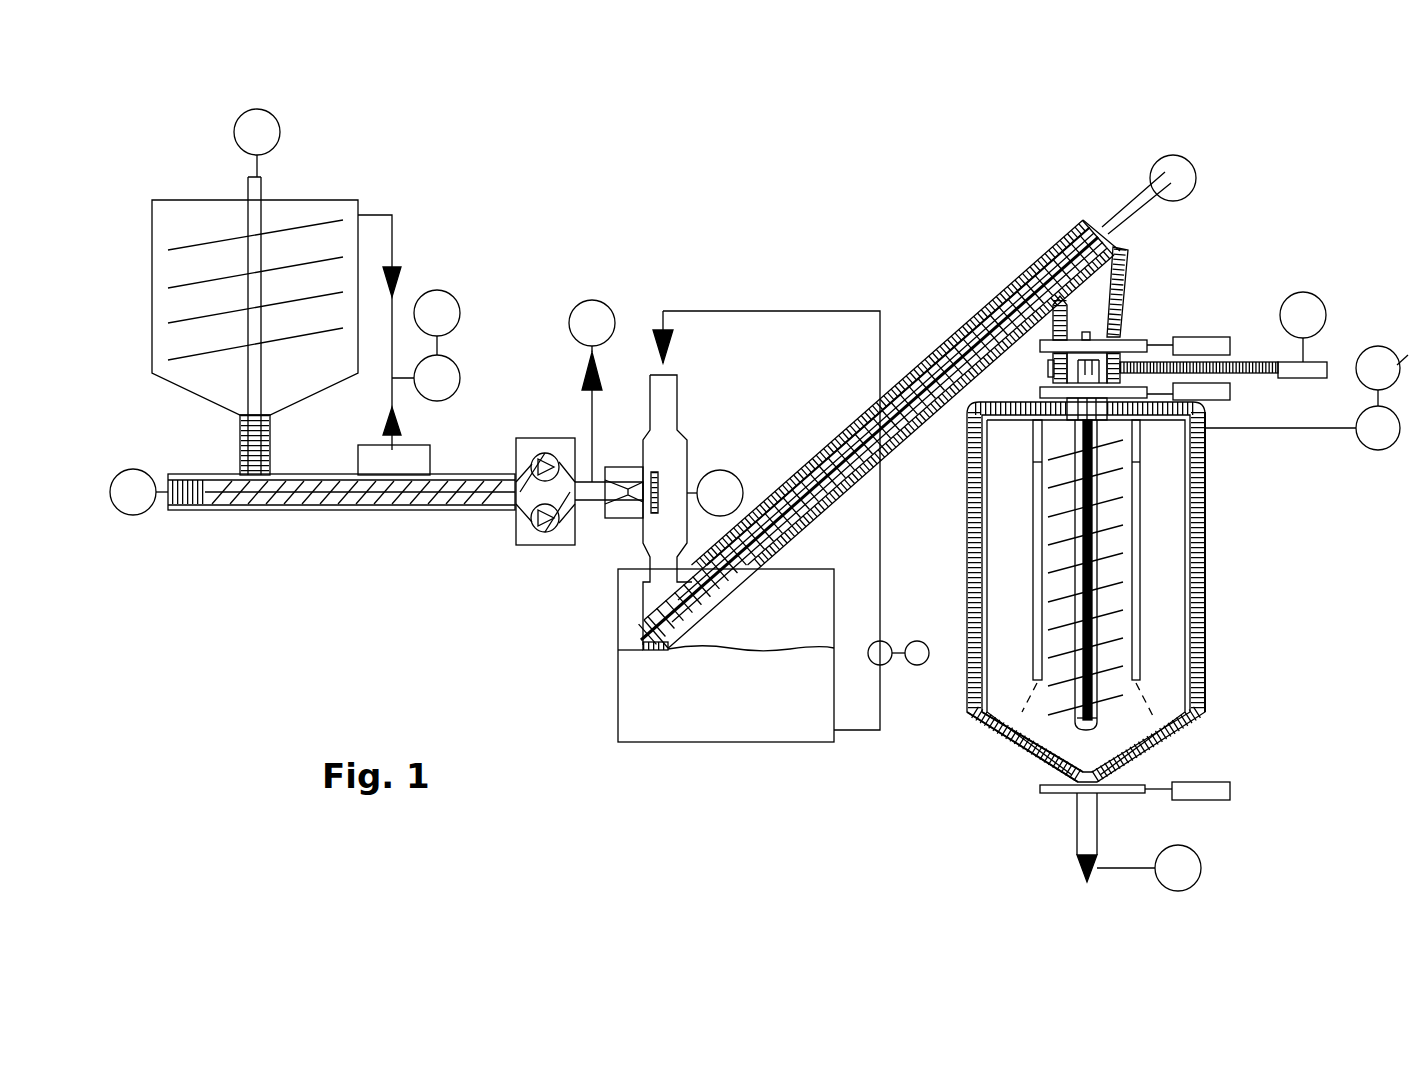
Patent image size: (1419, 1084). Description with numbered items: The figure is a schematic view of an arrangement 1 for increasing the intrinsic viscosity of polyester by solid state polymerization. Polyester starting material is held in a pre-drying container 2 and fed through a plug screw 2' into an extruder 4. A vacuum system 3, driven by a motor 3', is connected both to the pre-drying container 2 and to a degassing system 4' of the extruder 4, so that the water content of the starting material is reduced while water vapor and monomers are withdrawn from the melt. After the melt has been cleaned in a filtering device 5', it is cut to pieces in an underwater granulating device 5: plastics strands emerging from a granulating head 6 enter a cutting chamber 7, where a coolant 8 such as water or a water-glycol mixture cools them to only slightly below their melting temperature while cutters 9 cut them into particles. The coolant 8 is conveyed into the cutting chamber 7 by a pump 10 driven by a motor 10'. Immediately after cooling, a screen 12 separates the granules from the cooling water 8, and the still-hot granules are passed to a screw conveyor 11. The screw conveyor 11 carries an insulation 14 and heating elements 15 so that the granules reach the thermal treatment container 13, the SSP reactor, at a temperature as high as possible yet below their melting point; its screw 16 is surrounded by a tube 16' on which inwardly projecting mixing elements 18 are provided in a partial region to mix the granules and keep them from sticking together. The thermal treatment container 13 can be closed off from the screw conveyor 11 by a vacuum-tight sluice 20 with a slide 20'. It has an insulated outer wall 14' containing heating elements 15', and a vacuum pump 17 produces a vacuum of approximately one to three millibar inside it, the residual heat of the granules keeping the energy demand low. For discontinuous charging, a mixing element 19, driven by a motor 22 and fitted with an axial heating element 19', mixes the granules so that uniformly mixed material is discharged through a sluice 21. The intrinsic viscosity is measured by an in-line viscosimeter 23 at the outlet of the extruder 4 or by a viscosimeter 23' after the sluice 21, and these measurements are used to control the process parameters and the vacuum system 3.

The extruder enclosure 1 is at (748, 285).
The pre-drying container 2 is at (268, 262).
The plug screw 2' is at (274, 445).
The vacuum system 3 is at (433, 332).
The motor 3' is at (461, 306).
The extruder 4 is at (312, 535).
The degassing system 4' is at (415, 454).
The underwater granulating device 5 is at (615, 534).
The filtering device 5' is at (543, 524).
The granulating head 6 is at (615, 475).
The cutting chamber 7 is at (673, 477).
The coolant 8 is at (713, 717).
The cutters 9 is at (655, 480).
The pump 10 is at (891, 633).
The motor 10' is at (931, 691).
The screw conveyor 11 is at (922, 341).
The screen 12 is at (640, 650).
The thermal treatment container 13 is at (1231, 557).
The insulation 14 is at (892, 389).
The insulated outer wall 14' is at (1127, 705).
The heating elements 15 is at (933, 409).
The heating elements 15' is at (1247, 562).
The screw 16 is at (918, 397).
The tube 16' is at (723, 613).
The vacuum pump 17 is at (1385, 450).
The mixing elements 18 is at (823, 445).
The mixing element 19 is at (1161, 575).
The heating element 19' is at (1023, 758).
The vacuum-tight sluice 20 is at (1183, 325).
The slide 20' is at (1118, 296).
The sluice 21 is at (1056, 827).
The motor 22 is at (1323, 302).
The in-line viscosimeter 23 is at (598, 372).
The viscosimeter 23' is at (1179, 893).